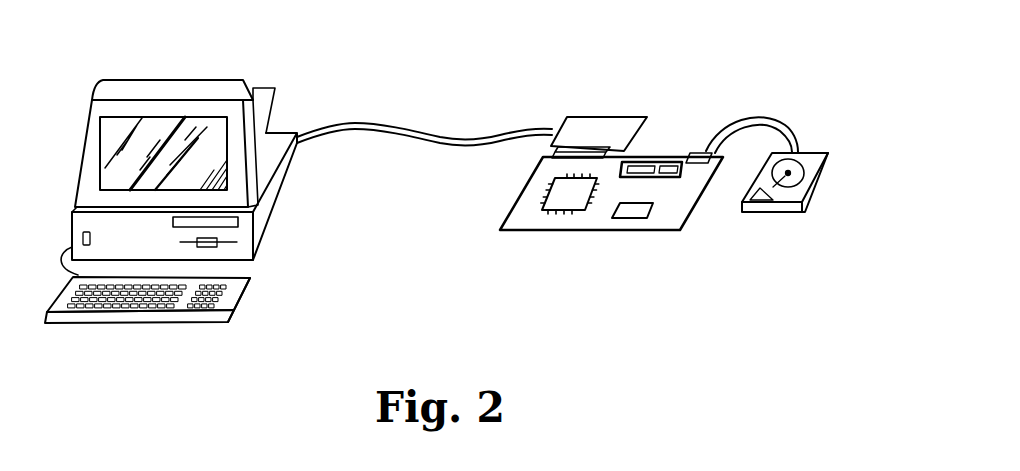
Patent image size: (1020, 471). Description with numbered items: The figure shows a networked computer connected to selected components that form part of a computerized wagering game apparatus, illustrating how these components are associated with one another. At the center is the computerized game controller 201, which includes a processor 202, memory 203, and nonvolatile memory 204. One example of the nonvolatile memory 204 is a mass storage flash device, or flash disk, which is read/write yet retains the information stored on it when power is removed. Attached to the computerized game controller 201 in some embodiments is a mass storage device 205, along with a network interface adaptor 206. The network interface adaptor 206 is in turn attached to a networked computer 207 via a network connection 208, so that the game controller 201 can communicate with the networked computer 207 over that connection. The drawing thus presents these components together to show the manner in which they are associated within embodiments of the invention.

The computerized game controller 201 is at (672, 232).
The processor 202 is at (553, 212).
The memory 203 is at (665, 162).
The nonvolatile memory 204 is at (628, 218).
The mass storage device 205 is at (815, 186).
The network interface adaptor 206 is at (600, 115).
The networked computer 207 is at (286, 146).
The network connection 208 is at (430, 130).